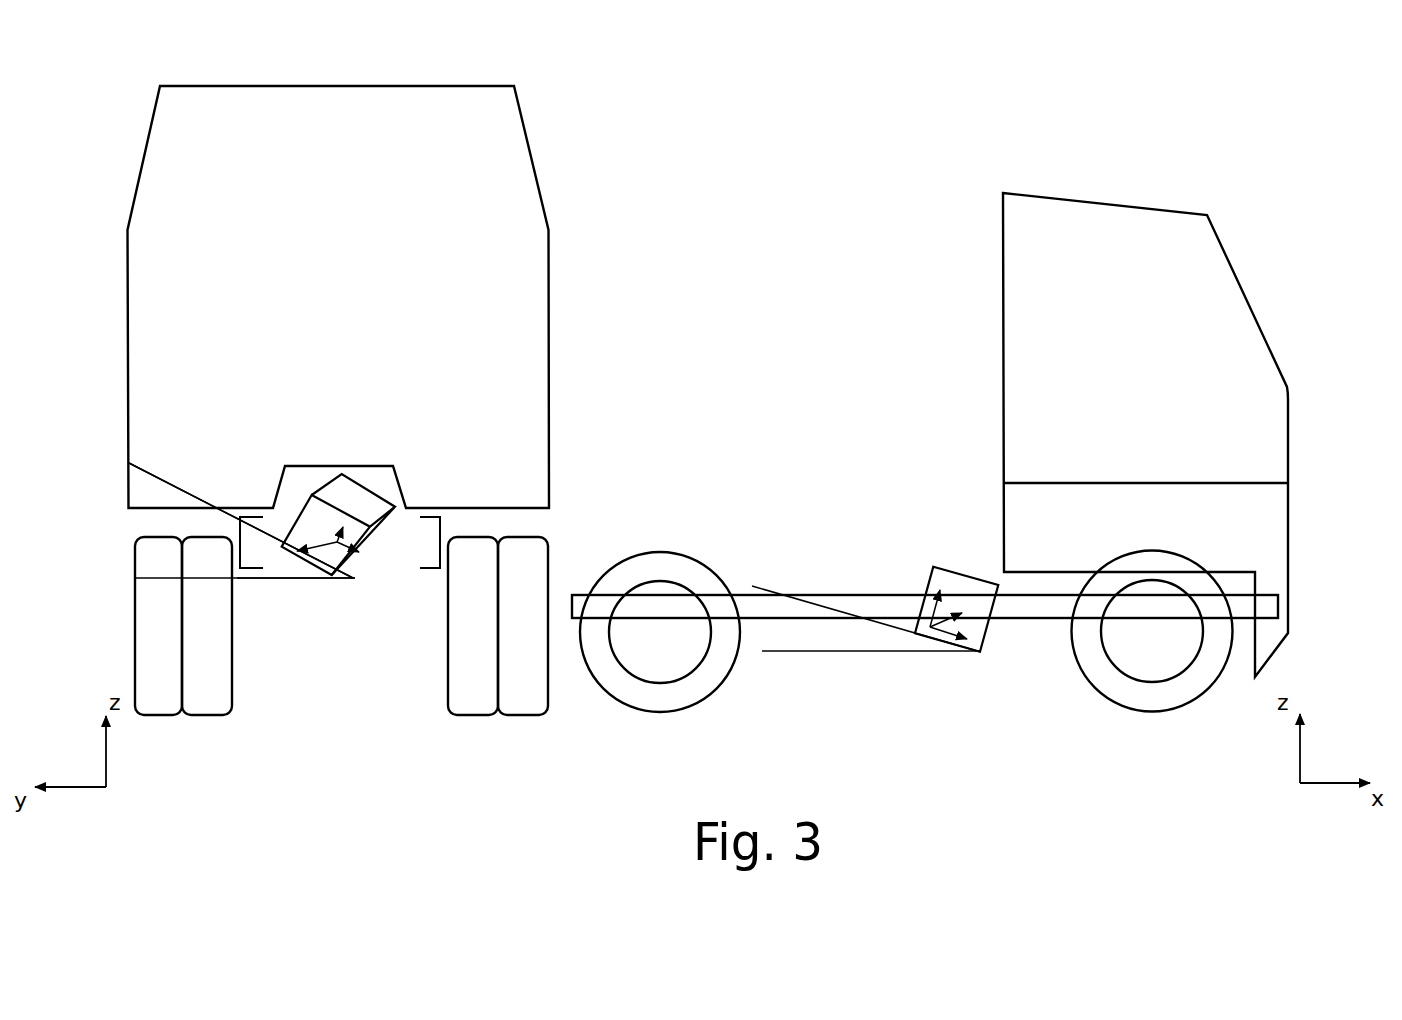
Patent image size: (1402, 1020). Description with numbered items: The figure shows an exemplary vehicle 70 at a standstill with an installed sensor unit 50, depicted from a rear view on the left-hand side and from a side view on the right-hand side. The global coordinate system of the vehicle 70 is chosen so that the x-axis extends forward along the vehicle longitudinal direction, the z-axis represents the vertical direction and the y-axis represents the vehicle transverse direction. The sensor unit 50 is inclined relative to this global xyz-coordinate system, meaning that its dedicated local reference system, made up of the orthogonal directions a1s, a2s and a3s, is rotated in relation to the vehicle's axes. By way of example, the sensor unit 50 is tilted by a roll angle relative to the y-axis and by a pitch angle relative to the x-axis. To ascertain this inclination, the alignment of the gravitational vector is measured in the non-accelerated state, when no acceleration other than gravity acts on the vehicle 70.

The vehicle 70 is at (340, 83).
The sensor unit 50 is at (358, 490).
The first sensor reference direction a1s is at (983, 717).
The second sensor reference direction a2s is at (962, 608).
The third sensor reference direction a3s is at (923, 587).